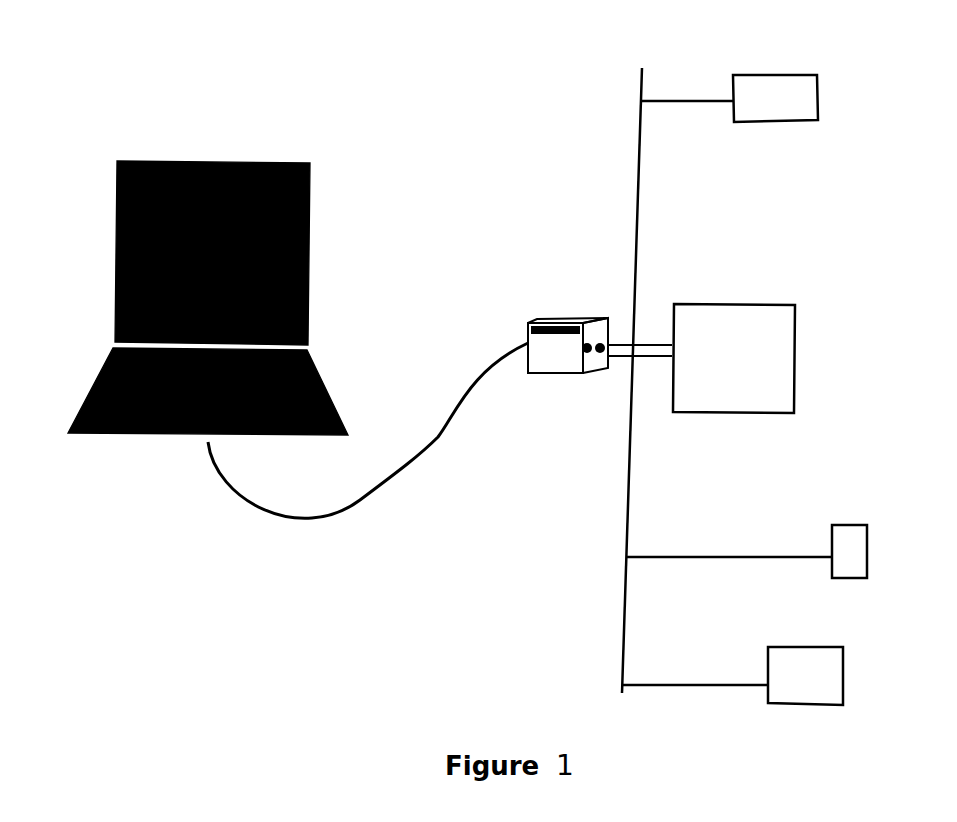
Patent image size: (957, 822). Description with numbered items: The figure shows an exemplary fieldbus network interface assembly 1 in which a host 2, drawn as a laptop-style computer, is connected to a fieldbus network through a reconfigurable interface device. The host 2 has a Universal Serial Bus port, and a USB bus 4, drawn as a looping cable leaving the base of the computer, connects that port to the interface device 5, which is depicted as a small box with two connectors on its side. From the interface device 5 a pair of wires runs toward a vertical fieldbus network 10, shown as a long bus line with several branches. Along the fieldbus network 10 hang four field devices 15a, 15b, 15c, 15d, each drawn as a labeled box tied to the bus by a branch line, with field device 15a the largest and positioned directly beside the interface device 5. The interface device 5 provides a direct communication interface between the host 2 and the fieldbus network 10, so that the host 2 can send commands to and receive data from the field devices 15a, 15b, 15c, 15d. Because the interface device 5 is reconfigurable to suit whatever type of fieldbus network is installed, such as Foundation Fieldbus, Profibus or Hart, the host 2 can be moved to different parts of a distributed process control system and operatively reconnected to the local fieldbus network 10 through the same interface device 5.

The fieldbus network interface assembly 1 is at (192, 74).
The host 2 is at (242, 160).
The USB bus 4 is at (438, 437).
The interface device 5 is at (573, 318).
The fieldbus network 10 is at (637, 203).
The field device 15a is at (795, 356).
The field device 15b is at (822, 89).
The field device 15c is at (868, 549).
The field device 15d is at (843, 672).